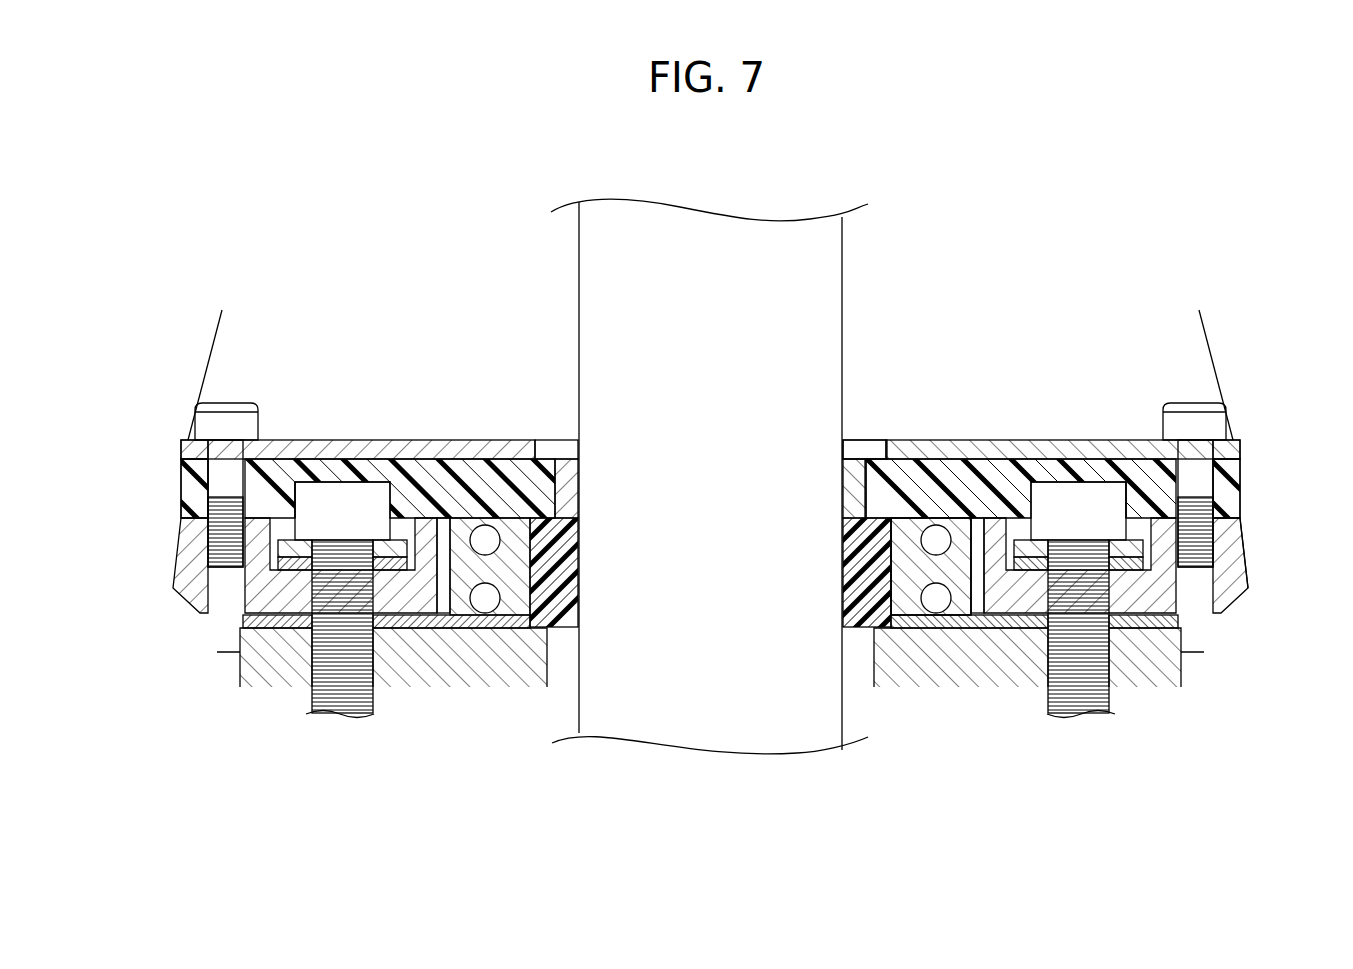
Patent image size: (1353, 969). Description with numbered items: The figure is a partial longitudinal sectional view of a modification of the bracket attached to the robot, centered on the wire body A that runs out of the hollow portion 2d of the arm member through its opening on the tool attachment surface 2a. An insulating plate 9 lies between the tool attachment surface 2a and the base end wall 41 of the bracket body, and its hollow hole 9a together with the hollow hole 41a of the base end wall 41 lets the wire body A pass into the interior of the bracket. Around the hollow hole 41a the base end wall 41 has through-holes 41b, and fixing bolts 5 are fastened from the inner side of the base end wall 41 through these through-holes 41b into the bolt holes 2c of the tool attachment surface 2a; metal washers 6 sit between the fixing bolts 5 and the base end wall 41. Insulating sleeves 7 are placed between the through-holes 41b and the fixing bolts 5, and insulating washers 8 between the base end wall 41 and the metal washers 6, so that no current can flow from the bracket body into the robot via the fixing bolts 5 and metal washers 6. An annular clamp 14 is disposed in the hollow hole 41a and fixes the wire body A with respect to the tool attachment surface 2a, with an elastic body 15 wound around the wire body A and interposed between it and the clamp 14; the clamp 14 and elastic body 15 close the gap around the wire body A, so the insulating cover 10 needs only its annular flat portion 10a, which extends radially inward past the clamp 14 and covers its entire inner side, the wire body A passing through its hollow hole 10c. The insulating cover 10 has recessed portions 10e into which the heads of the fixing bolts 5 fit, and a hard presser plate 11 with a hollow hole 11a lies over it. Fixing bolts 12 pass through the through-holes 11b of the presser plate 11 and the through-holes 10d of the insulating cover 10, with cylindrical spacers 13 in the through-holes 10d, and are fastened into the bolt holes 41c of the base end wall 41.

The wire body A is at (845, 270).
The presser plate 11 is at (482, 440).
The hollow hole 11a is at (870, 440).
The through-hole 11b is at (222, 442).
The insulating cover 10 is at (957, 480).
The flat portion 10a is at (905, 540).
The hollow hole 10c is at (868, 488).
The through-hole 10d is at (215, 477).
The recessed portion 10e is at (300, 483).
The cylindrical spacer 13 is at (203, 507).
The fixing bolt 5 is at (365, 492).
The metal washer 6 is at (398, 545).
The insulating washer 8 is at (387, 568).
The bolt hole 2c is at (362, 650).
The tool attachment surface 2a is at (510, 598).
The hollow portion 2d is at (555, 640).
The insulating plate 9 is at (1177, 618).
The hollow hole 9a is at (452, 628).
The insulating sleeve 7 is at (270, 587).
The clamp 14 is at (950, 628).
The elastic body 15 is at (850, 572).
The fixing bolt 12 is at (227, 403).
The base end wall 41 is at (1252, 550).
The hollow hole 41a is at (442, 557).
The through-hole 41b is at (313, 603).
The bolt hole 41c is at (205, 608).